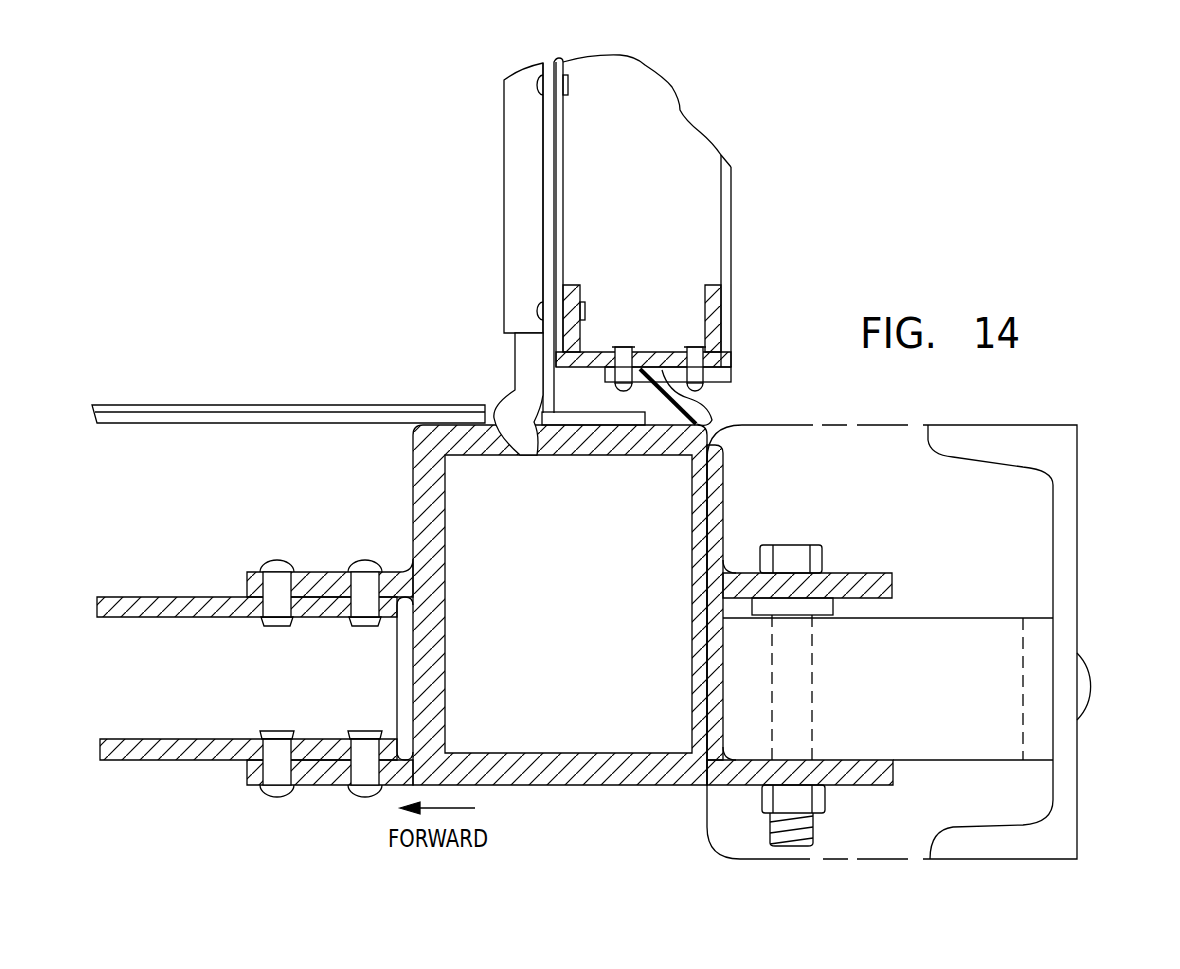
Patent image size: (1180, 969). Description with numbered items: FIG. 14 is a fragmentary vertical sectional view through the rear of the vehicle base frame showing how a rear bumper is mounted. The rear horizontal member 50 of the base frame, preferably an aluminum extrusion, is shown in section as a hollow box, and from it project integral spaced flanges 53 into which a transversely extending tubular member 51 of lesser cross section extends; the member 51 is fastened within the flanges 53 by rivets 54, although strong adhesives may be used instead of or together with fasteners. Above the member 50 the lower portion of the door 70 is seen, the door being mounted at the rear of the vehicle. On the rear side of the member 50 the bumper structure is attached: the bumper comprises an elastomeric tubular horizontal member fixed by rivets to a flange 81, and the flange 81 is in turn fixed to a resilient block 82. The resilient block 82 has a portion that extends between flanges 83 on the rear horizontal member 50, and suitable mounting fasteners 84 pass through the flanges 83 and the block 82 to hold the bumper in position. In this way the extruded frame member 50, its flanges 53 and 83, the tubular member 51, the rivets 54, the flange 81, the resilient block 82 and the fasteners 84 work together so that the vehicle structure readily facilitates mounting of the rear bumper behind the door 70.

The transversely extending member 50 is at (537, 753).
The transversely extending tubular member 51 is at (158, 748).
The spaced flange 53 is at (317, 597).
The rivet 54 is at (358, 732).
The door 70 is at (675, 255).
The flange 81 is at (1065, 565).
The resilient block 82 is at (890, 637).
The flange 83 is at (845, 587).
The mounting fastener 84 is at (805, 543).